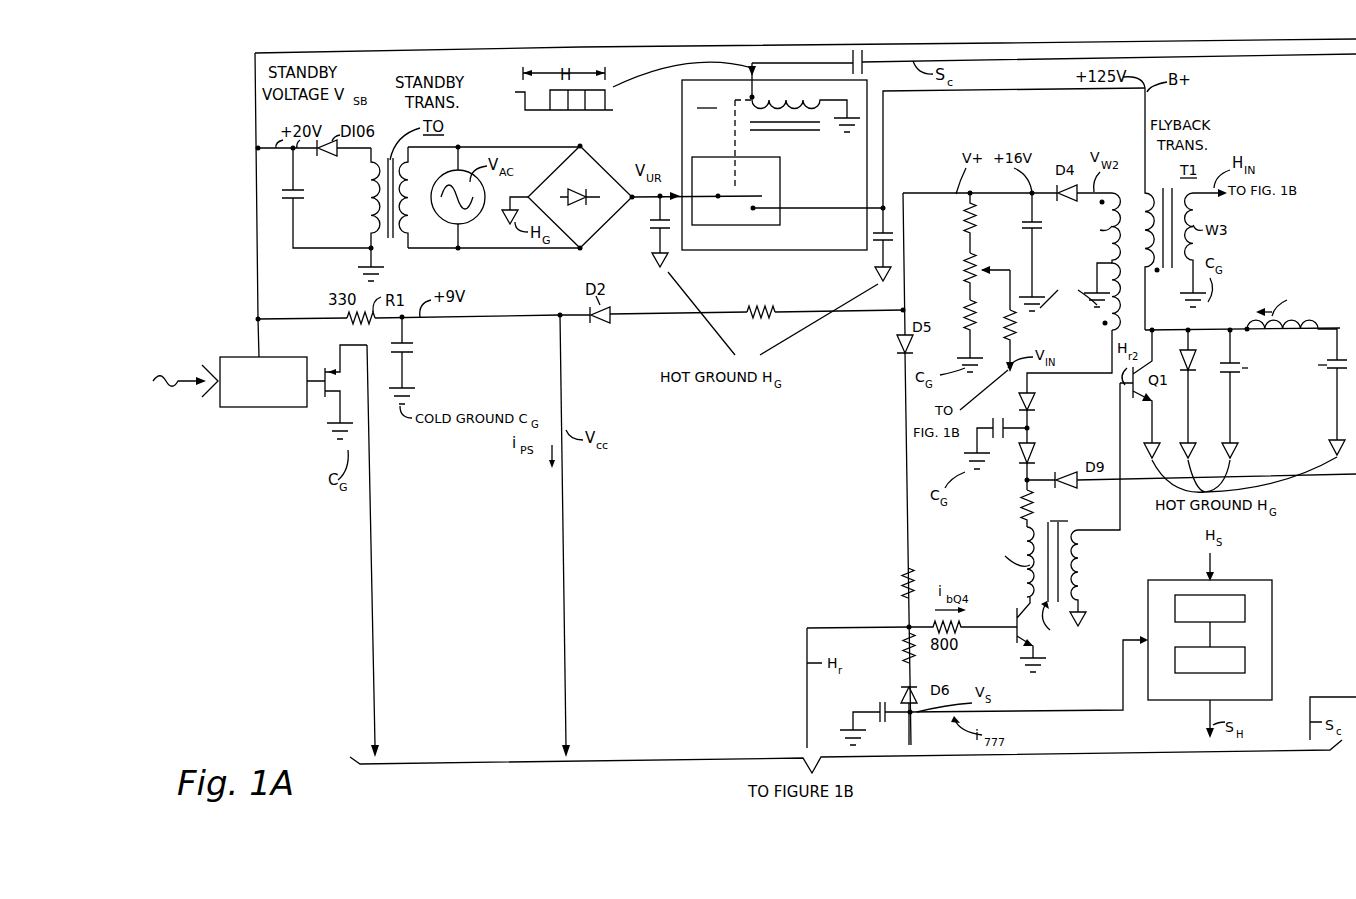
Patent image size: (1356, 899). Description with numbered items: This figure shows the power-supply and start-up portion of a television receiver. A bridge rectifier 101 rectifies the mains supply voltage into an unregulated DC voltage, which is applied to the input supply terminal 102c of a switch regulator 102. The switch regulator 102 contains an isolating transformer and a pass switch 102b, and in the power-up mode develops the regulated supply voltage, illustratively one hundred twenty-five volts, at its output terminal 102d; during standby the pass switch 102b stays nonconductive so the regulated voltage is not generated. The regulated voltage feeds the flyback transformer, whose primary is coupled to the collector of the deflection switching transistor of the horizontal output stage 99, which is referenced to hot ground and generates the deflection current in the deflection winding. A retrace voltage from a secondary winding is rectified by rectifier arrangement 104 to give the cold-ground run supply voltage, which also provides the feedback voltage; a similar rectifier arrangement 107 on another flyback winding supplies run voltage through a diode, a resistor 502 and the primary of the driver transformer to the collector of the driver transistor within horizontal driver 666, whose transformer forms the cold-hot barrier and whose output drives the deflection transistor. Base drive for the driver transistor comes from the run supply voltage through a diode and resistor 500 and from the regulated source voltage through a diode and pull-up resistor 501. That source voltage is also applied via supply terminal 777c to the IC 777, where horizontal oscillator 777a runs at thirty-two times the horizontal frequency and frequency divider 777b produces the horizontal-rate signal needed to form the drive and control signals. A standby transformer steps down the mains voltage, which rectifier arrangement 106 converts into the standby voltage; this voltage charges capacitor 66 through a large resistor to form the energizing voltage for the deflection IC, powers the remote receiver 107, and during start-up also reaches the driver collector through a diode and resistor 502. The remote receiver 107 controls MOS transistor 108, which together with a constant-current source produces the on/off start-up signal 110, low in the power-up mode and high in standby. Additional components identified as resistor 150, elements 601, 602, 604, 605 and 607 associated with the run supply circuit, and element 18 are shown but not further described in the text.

The horizontal circuit output stage 99 is at (1297, 409).
The bridge rectifier 101 is at (592, 181).
The switch regulator 102 is at (740, 248).
The pass switch 102b is at (783, 226).
The input supply terminal 102c is at (682, 183).
The output terminal 102d is at (867, 205).
The rectifier arrangement 104 is at (1073, 258).
The rectifier arrangement 106 is at (349, 209).
The rectifier arrangement 107 is at (228, 356).
The MOS transistor 108 is at (333, 366).
The start-up or on/off signal 110 is at (374, 442).
The resistor 150 is at (752, 301).
The capacitor 66 is at (408, 351).
The resistor 500 is at (907, 570).
The pull-up resistor 501 is at (905, 645).
The resistor 502 is at (1025, 500).
The resistor 601 is at (976, 227).
The resistor 602 is at (972, 338).
The potentiometer 604 is at (975, 266).
The voltage divider 605 is at (957, 298).
The resistor 607 is at (1016, 330).
The transformer T2 18 is at (1040, 565).
The horizontal driver 666 is at (1091, 692).
The IC 777 is at (1224, 643).
The horizontal oscillator 777a is at (1190, 596).
The frequency divider 777b is at (1247, 660).
The supply terminal 777c is at (1143, 635).